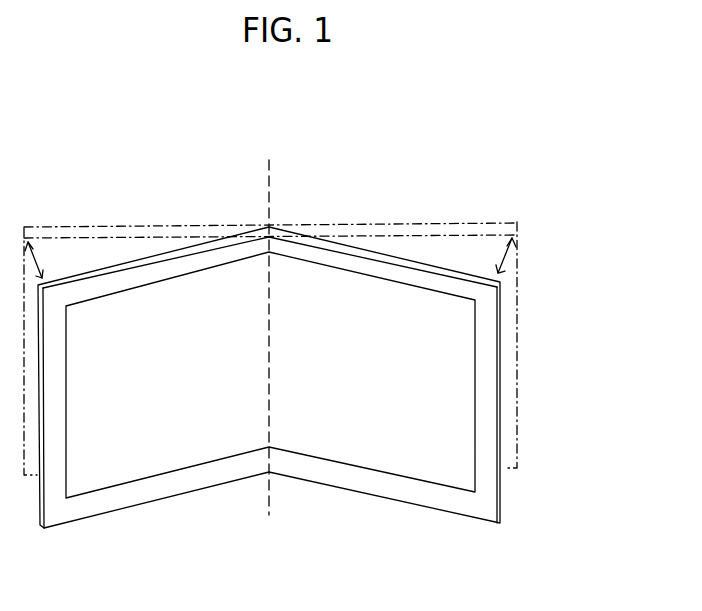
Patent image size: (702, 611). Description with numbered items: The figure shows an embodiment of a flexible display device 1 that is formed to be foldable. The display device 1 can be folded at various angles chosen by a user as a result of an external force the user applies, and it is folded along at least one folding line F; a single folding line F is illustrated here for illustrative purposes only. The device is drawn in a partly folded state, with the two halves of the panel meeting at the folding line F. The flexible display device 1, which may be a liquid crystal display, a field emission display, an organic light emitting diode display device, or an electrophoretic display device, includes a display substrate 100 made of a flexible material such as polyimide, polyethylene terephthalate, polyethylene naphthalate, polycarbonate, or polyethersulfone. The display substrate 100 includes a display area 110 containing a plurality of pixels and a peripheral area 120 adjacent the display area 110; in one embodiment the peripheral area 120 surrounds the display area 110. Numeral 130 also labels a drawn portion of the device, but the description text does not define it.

The flexible display device 1 is at (320, 356).
The display substrate 100 is at (327, 404).
The display area 110 is at (362, 440).
The peripheral area 120 is at (269, 377).
The side surface / edge portion 130 is at (487, 498).